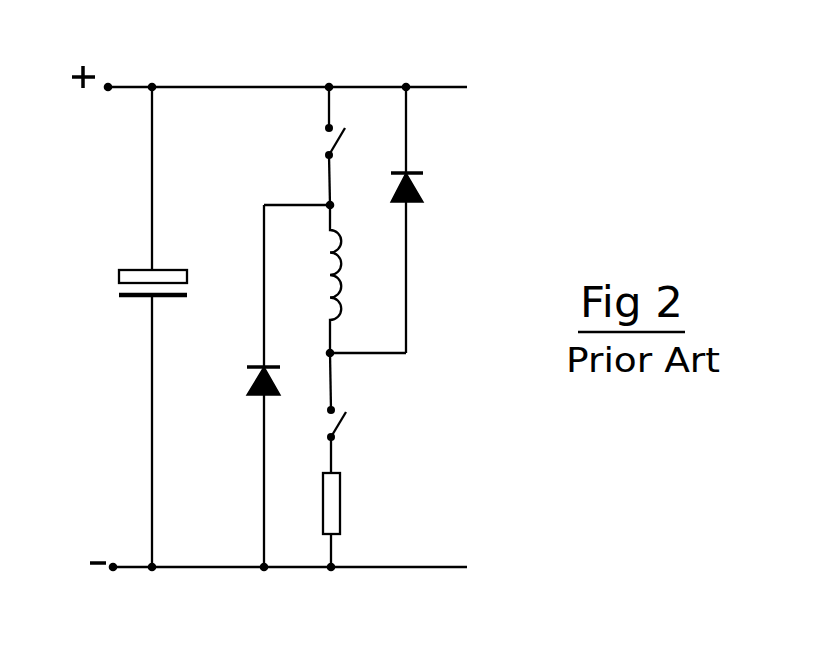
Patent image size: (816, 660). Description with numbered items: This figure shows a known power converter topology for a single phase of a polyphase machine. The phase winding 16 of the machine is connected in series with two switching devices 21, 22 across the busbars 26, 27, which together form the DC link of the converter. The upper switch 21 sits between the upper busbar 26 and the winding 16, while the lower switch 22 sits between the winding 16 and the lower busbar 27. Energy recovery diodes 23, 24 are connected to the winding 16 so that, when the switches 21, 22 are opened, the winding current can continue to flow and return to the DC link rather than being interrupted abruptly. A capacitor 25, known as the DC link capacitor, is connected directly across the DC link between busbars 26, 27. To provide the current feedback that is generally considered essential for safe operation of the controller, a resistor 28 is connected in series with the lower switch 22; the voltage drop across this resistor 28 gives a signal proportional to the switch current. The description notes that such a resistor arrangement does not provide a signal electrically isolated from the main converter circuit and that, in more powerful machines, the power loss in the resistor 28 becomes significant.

The phase winding 16 is at (347, 253).
The switching device 21 is at (326, 148).
The switching device 22 is at (348, 423).
The energy recovery diode 23 is at (427, 183).
The energy recovery diode 24 is at (245, 373).
The capacitor 25 is at (115, 285).
The busbar 26 is at (236, 86).
The busbar 27 is at (217, 568).
The resistor 28 is at (341, 500).